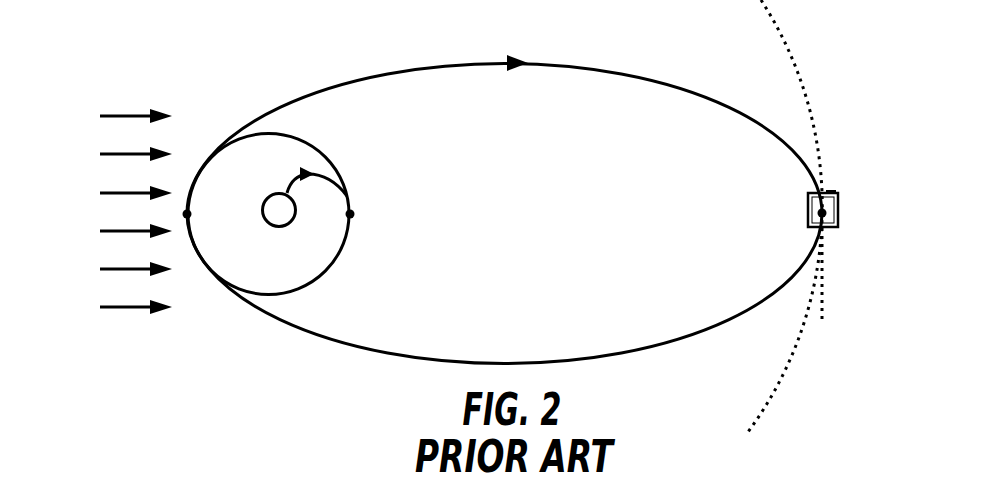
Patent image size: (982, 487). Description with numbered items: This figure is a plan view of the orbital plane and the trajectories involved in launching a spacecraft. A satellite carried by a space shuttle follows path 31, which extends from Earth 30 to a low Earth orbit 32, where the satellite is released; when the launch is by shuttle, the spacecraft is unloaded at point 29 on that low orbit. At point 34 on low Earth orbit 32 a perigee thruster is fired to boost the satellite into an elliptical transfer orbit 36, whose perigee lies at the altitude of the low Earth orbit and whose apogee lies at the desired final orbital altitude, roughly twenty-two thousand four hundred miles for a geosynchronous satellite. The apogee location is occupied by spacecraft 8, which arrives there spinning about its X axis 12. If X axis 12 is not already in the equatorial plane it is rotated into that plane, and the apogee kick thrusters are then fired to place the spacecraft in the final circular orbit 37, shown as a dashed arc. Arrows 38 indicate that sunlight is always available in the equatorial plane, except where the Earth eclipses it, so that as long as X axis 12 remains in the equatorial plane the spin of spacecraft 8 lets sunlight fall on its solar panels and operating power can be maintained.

The spacecraft 8 is at (840, 200).
The X axis 12 is at (822, 290).
The unloading point 29 is at (352, 215).
The Earth 30 is at (264, 206).
The path 31 is at (322, 178).
The low Earth orbit 32 is at (278, 135).
The perigee thruster firing point 34 is at (190, 215).
The elliptical transfer orbit 36 is at (545, 66).
The final circular orbit 37 is at (766, 20).
The sunlight arrows 38 is at (117, 116).